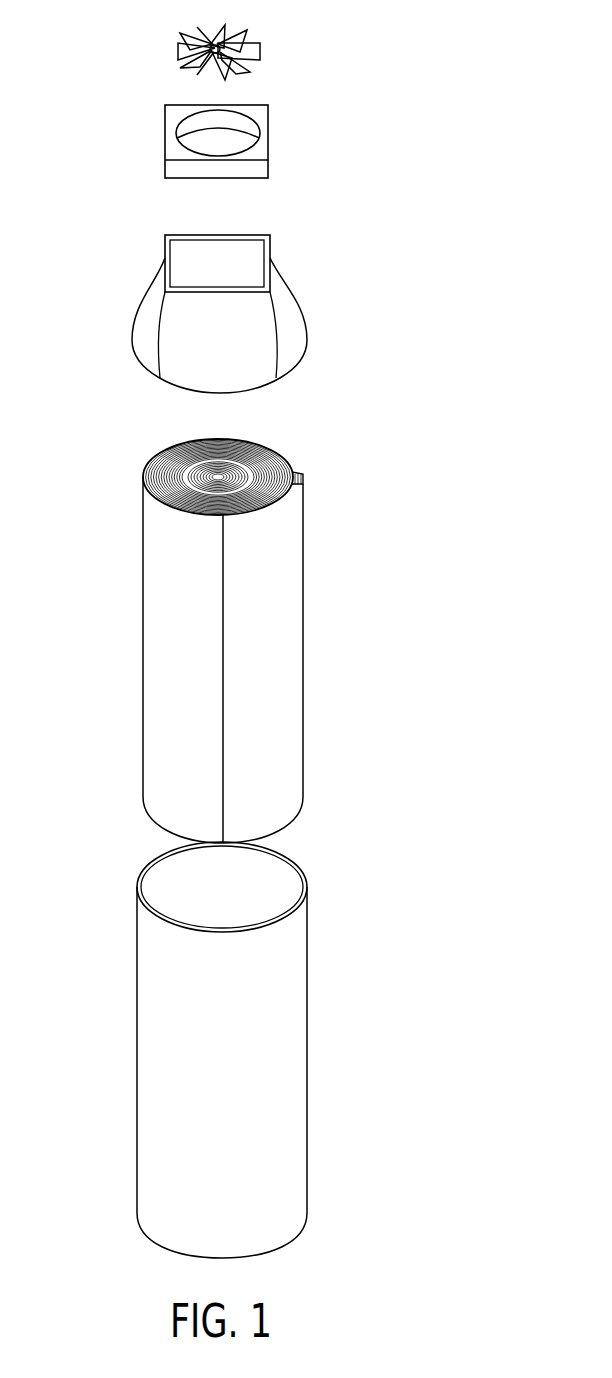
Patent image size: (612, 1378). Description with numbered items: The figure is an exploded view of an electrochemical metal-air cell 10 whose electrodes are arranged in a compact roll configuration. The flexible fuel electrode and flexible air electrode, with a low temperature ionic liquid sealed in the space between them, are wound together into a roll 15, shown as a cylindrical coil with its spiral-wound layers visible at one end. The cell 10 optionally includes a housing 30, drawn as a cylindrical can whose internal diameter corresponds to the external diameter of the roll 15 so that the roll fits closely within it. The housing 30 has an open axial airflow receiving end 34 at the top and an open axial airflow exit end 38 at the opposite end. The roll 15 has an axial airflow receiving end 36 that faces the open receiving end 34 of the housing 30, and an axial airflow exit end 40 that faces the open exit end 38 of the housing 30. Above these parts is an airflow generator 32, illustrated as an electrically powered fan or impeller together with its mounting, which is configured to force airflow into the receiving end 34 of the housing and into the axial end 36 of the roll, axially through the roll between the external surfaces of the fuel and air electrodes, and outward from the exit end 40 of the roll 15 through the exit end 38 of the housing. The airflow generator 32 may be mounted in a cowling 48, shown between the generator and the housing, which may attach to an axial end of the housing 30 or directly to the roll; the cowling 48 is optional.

The electrochemical metal-air cell 10 is at (419, 235).
The roll 15 is at (227, 645).
The housing 30 is at (241, 1070).
The airflow generator 32 is at (277, 12).
The open axial airflow receiving end 34 is at (303, 895).
The axial airflow receiving end of the roll 36 is at (303, 481).
The open axial airflow exit end 38 is at (150, 1237).
The axial airflow exit end of the roll 40 is at (300, 820).
The cowling 48 is at (292, 347).